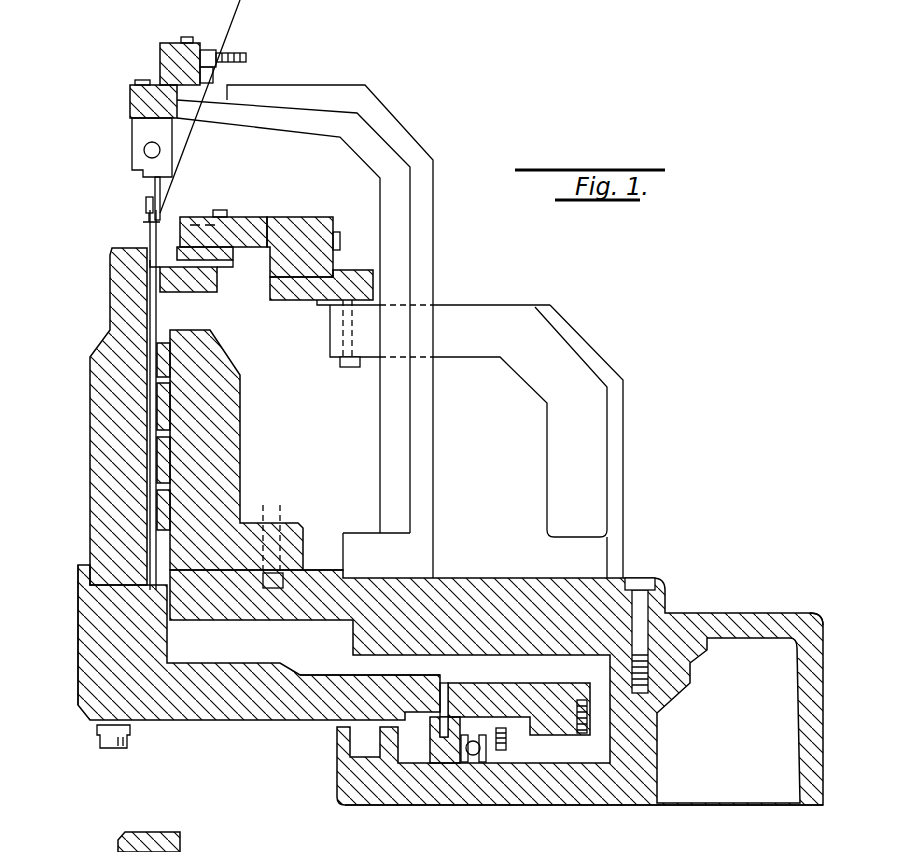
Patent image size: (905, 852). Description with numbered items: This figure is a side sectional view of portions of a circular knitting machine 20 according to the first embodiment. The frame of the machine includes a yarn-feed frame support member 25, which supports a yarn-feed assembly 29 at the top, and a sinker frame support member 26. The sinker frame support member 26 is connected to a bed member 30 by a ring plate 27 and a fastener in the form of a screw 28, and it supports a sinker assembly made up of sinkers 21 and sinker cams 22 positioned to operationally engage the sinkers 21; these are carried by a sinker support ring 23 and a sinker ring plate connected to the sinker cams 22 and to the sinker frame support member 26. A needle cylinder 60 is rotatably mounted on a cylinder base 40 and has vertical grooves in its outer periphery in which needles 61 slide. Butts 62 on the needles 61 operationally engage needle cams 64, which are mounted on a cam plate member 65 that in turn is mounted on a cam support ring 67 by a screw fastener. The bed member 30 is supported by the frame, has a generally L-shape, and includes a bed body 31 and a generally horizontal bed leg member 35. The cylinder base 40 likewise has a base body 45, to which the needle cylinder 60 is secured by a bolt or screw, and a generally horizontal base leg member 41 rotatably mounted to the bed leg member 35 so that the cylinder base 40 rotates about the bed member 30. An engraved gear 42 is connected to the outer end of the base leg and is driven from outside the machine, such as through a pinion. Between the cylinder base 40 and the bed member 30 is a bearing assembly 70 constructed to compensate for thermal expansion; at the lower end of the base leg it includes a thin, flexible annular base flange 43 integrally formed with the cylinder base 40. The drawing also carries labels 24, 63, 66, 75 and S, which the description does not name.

The circular knitting machine 20 is at (115, 168).
The sinkers 21 is at (185, 228).
The sinker cams 22 is at (213, 247).
The sinker support ring 23 is at (297, 217).
The bracket 24 is at (352, 277).
The yarn-feed frame support member 25 is at (433, 408).
The sinker frame support member 26 is at (615, 410).
The ring plate 27 is at (510, 578).
The screw 28 is at (635, 578).
The yarn-feed assembly 29 is at (150, 60).
The bed member 30 is at (648, 810).
The bed body 31 is at (815, 625).
The bed leg member 35 is at (590, 795).
The cylinder base 40 is at (225, 722).
The base leg member 41 is at (262, 720).
The engraved gear 42 is at (655, 718).
The flexible annular base flange 43 is at (430, 760).
The base body 45 is at (90, 620).
The needle cylinder 60 is at (92, 405).
The needles 61 is at (146, 210).
The butts 62 is at (152, 357).
The lower block 63 is at (205, 283).
The needle cams 64 is at (170, 420).
The cam plate member 65 is at (238, 410).
The bolt 66 is at (266, 505).
The cam support ring 67 is at (345, 535).
The bearing assembly 70 is at (470, 768).
The bore 75 is at (430, 690).
The slide block S is at (196, 130).